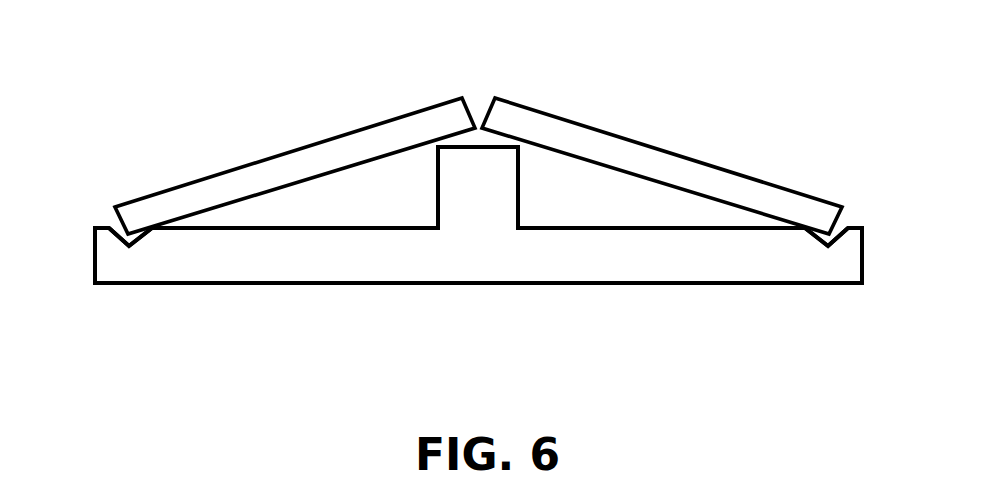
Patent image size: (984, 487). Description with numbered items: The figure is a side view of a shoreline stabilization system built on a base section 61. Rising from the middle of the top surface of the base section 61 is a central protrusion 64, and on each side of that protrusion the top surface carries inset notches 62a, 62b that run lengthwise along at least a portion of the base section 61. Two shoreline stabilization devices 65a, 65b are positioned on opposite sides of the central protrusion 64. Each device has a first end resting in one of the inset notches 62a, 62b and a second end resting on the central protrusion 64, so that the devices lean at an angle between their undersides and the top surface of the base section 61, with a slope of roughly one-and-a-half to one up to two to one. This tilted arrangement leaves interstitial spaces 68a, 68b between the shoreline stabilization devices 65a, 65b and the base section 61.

The base section 61 is at (313, 260).
The central protrusion 64 is at (490, 190).
The inset notch 62a is at (120, 245).
The inset notch 62b is at (838, 240).
The shoreline stabilization device 65a is at (223, 187).
The shoreline stabilization device 65b is at (733, 188).
The interstitial space 68a is at (356, 200).
The interstitial space 68b is at (596, 196).